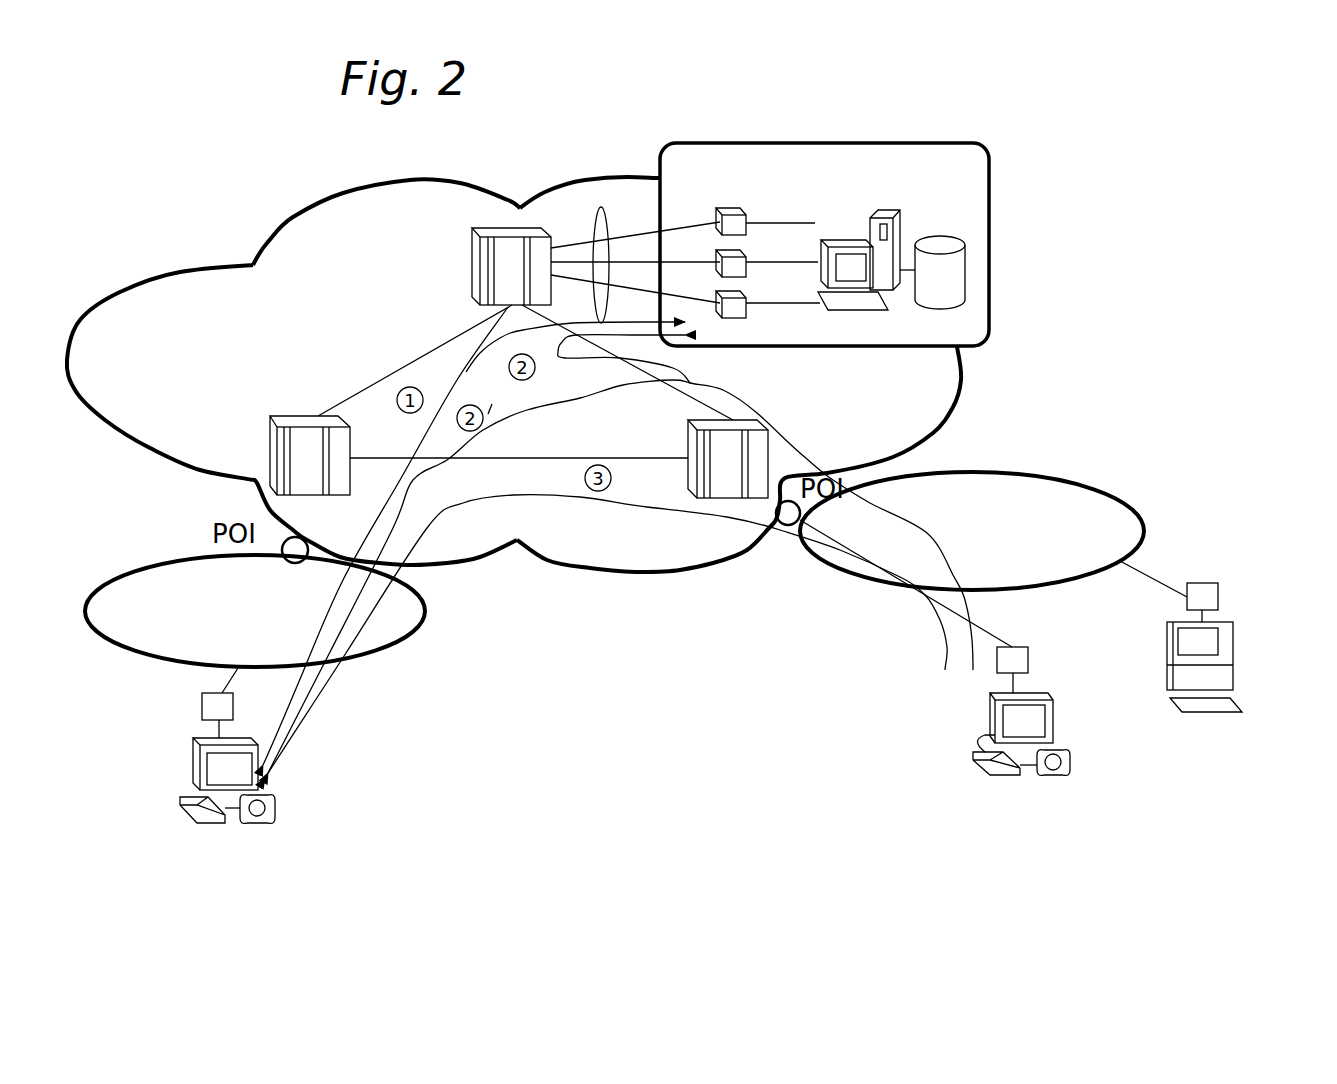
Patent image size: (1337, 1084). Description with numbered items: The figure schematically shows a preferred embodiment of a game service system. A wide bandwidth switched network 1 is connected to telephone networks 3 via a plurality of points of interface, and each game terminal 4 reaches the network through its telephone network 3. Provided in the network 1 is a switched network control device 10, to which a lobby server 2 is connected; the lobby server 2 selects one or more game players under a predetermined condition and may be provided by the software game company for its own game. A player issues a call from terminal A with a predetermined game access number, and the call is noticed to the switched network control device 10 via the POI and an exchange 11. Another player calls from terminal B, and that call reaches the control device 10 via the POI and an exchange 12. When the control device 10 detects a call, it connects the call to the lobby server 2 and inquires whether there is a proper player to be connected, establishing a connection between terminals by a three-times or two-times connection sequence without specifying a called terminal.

The wide bandwidth switched network 1 is at (114, 442).
The lobby server 2 is at (945, 178).
The telephone network 3 is at (427, 615).
The game terminal 4 is at (278, 792).
The switched network control device 10 is at (500, 227).
The exchange 11 is at (270, 438).
The exchange 12 is at (770, 438).